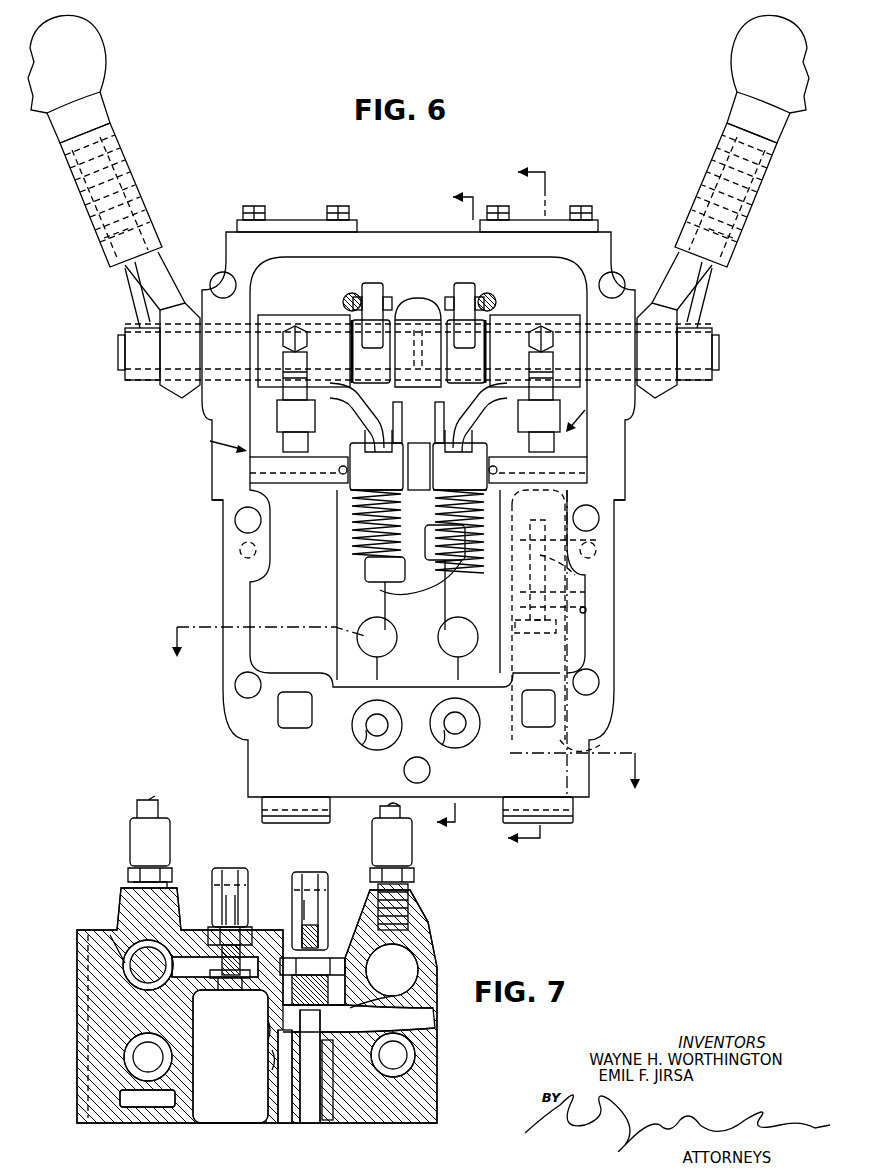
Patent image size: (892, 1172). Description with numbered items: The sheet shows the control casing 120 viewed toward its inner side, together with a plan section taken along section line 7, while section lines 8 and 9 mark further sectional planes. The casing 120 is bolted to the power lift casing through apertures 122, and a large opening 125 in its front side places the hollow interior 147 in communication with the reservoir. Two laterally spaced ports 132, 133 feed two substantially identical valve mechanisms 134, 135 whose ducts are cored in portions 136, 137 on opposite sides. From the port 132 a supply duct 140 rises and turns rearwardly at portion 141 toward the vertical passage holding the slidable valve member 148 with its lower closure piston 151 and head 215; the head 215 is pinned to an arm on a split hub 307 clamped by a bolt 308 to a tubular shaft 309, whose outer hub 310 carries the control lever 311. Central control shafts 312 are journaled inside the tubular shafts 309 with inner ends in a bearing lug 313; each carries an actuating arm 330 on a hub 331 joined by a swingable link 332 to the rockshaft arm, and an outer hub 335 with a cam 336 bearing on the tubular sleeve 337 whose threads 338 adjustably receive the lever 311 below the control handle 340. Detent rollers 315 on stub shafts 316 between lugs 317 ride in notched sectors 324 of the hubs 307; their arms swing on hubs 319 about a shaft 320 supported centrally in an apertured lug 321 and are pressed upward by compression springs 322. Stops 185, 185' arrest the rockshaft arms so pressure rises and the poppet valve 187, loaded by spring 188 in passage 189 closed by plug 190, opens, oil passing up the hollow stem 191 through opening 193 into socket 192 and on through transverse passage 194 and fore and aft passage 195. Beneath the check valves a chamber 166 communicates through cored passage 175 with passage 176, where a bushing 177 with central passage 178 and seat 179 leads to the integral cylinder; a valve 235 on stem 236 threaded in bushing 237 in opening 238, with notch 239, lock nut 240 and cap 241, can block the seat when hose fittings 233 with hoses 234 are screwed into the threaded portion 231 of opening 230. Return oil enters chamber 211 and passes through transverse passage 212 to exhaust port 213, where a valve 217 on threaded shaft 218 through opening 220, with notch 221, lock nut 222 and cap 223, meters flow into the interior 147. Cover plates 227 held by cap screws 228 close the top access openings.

In FIG. 6, the control casing 120 is at (226, 228).
In FIG. 7, the control casing 120 is at (257, 1005).
In FIG. 6, the apertures 122 is at (244, 520).
In FIG. 6, the large opening 125 is at (587, 610).
In FIG. 6, the port 132 is at (530, 706).
In FIG. 6, the port 133 is at (300, 710).
In FIG. 6, the valve mechanism 134 is at (592, 416).
In FIG. 6, the valve mechanism 135 is at (209, 441).
In FIG. 6, the portion of the cast housing 136 is at (488, 560).
In FIG. 6, the portion of the cast housing 137 is at (340, 535).
In FIG. 6, the supply duct 140 is at (567, 645).
In FIG. 7, the supply duct 140 is at (147, 1100).
In FIG. 6, the rearwardly extending portion 141 is at (585, 587).
In FIG. 6, the hollow interior 147 is at (283, 597).
In FIG. 7, the hollow interior 147 is at (230, 1056).
In FIG. 6, the valve member 148 is at (282, 452).
In FIG. 7, the closure portion 151 is at (146, 958).
In FIG. 7, the chamber 166 is at (430, 960).
In FIG. 7, the cored passage 175 is at (395, 1025).
In FIG. 6, the passage 176 is at (399, 757).
In FIG. 7, the passage 176 is at (325, 1122).
In FIG. 6, the bushing 177 is at (360, 735).
In FIG. 7, the bushing 177 is at (326, 1095).
In FIG. 6, the central passage 178 is at (380, 735).
In FIG. 7, the central passage 178 is at (282, 1120).
In FIG. 7, the valve seat 179 is at (272, 1030).
In FIG. 6, the stop 185 is at (445, 577).
In FIG. 6, the spring seat 185' is at (385, 593).
In FIG. 6, the poppet valve 187 is at (558, 636).
In FIG. 7, the compression spring 188 is at (133, 1047).
In FIG. 6, the passage 189 is at (593, 737).
In FIG. 7, the passage 189 is at (150, 1060).
In FIG. 6, the plug 190 is at (292, 814).
In FIG. 6, the stem 191 is at (575, 567).
In FIG. 6, the socket 192 is at (560, 520).
In FIG. 6, the axially extending opening 193 is at (535, 545).
In FIG. 6, the transverse passage 194 is at (598, 537).
In FIG. 6, the fore and aft passage 195 is at (242, 556).
In FIG. 7, the chamber 211 is at (102, 932).
In FIG. 7, the transverse passage 212 is at (185, 965).
In FIG. 6, the valve port 213 is at (440, 628).
In FIG. 7, the valve port 213 is at (216, 980).
In FIG. 6, the head 215 is at (277, 405).
In FIG. 6, the valve 217 is at (448, 652).
In FIG. 7, the valve 217 is at (236, 980).
In FIG. 7, the threaded shaft 218 is at (243, 935).
In FIG. 7, the threaded opening 220 is at (222, 935).
In FIG. 7, the notch 221 is at (240, 902).
In FIG. 7, the lock nut 222 is at (226, 915).
In FIG. 7, the threaded cap 223 is at (230, 868).
In FIG. 6, the cover plates 227 is at (312, 220).
In FIG. 6, the cap screws 228 is at (260, 206).
In FIG. 7, the opening 230 is at (392, 970).
In FIG. 7, the threaded portion 231 is at (410, 888).
In FIG. 7, the hose connecting fittings 233 is at (135, 838).
In FIG. 7, the flexible hoses 234 is at (158, 813).
In FIG. 7, the valve 235 is at (276, 1055).
In FIG. 7, the threaded stem 236 is at (318, 928).
In FIG. 7, the bushing 237 is at (288, 956).
In FIG. 7, the threaded opening 238 is at (370, 1005).
In FIG. 7, the notch 239 is at (320, 908).
In FIG. 7, the lock nut 240 is at (388, 984).
In FIG. 7, the threaded cap 241 is at (310, 878).
In FIG. 6, the split hub 307 is at (308, 315).
In FIG. 6, the clamping bolt 308 is at (292, 328).
In FIG. 6, the tubular shaft 309 is at (256, 326).
In FIG. 6, the hub 310 is at (172, 392).
In FIG. 6, the actuating lever 311 is at (160, 272).
In FIG. 6, the central control shaft 312 is at (118, 357).
In FIG. 6, the bearing lug 313 is at (420, 312).
In FIG. 6, the detent roller 315 is at (418, 466).
In FIG. 6, the stub shaft 316 is at (406, 425).
In FIG. 6, the lugs 317 is at (480, 438).
In FIG. 6, the hub 319 is at (418, 479).
In FIG. 6, the shaft 320 is at (302, 483).
In FIG. 6, the apertured lug 321 is at (419, 492).
In FIG. 6, the compression spring 322 is at (380, 590).
In FIG. 6, the sector 324 is at (365, 395).
In FIG. 6, the actuating arm 330 is at (378, 293).
In FIG. 6, the hub 331 is at (352, 350).
In FIG. 6, the swingable link 332 is at (352, 292).
In FIG. 6, the hub 335 is at (137, 332).
In FIG. 6, the cam 336 is at (137, 283).
In FIG. 6, the tubular sleeve 337 is at (122, 176).
In FIG. 6, the threads 338 is at (122, 148).
In FIG. 6, the control handle 340 is at (100, 50).
In FIG. 6, the section line 7 is at (406, 719).
In FIG. 6, the section line 8 is at (517, 505).
In FIG. 6, the section line 9 is at (447, 507).